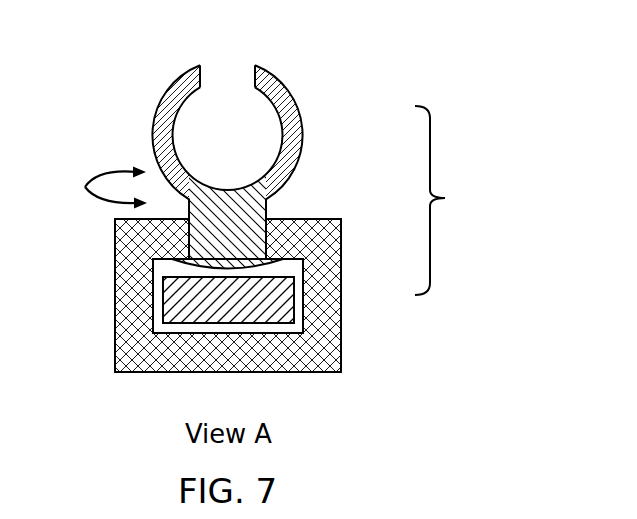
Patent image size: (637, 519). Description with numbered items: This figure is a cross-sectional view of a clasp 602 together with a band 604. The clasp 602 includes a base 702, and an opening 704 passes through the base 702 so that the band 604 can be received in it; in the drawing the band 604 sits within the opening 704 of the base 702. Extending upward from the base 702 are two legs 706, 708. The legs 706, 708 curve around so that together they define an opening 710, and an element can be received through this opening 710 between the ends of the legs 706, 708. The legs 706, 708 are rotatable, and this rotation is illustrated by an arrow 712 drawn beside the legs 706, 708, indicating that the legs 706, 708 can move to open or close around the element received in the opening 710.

The clasp 602 is at (458, 200).
The band 604 is at (172, 304).
The base 702 is at (341, 229).
The opening 704 is at (293, 268).
The leg 706 is at (285, 162).
The leg 708 is at (177, 106).
The opening 710 is at (230, 78).
The arrow 712 is at (94, 188).